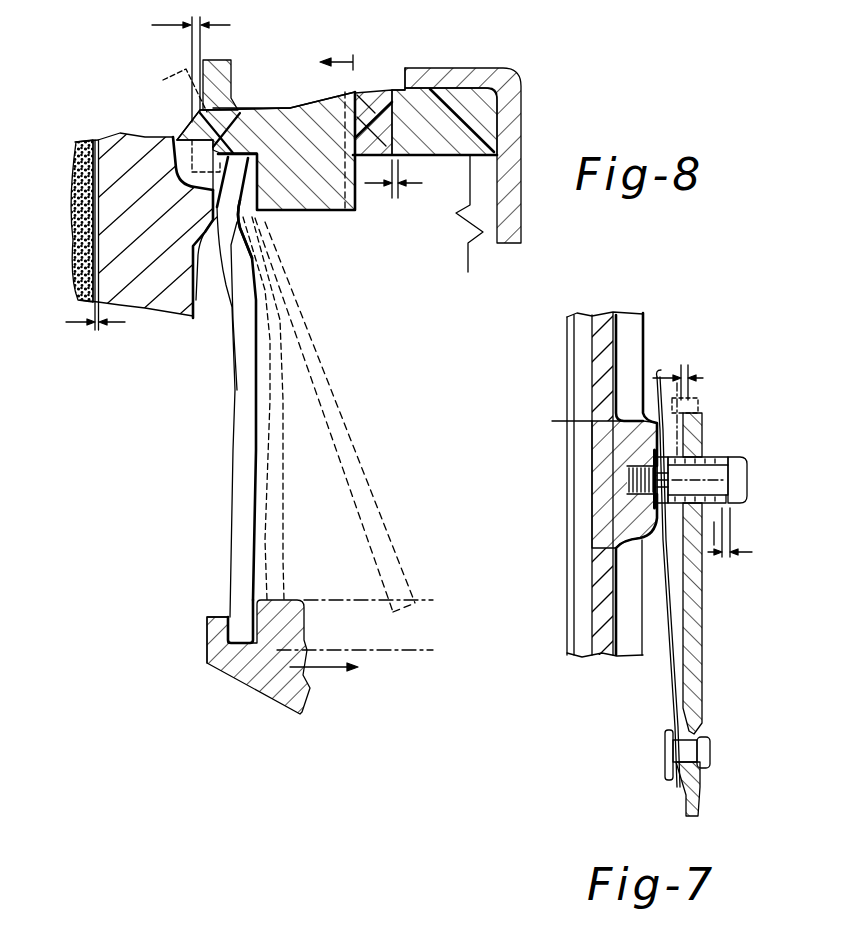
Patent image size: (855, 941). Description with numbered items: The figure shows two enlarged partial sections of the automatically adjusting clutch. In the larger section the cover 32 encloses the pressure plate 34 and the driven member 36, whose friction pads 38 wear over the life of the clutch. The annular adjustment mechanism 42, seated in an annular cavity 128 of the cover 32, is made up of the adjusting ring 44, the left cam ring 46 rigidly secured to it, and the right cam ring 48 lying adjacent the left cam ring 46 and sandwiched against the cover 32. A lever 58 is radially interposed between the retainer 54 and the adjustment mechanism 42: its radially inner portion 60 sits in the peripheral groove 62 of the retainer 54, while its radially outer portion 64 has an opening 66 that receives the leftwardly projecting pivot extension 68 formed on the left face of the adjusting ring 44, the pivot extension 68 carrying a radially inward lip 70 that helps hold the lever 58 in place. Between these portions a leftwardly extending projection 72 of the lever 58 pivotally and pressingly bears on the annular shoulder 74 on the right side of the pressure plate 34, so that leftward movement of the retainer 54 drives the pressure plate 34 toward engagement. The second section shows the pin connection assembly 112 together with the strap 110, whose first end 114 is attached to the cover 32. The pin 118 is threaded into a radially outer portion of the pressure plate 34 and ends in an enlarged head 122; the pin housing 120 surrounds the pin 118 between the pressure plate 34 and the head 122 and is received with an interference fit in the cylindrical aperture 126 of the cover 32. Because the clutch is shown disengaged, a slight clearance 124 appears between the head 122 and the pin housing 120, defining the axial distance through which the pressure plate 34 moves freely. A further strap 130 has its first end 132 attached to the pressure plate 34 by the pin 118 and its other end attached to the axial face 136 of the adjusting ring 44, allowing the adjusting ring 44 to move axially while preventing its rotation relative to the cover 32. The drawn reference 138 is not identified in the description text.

In FIG. 8, the cover 32 is at (513, 185).
In FIG. 7, the cover 32 is at (695, 632).
In FIG. 8, the pressure plate 34 is at (120, 162).
In FIG. 7, the pressure plate 34 is at (600, 365).
In FIG. 8, the driven member 36 is at (56, 260).
In FIG. 8, the friction pad 38 is at (78, 165).
In FIG. 8, the adjustment mechanism 42 is at (394, 64).
In FIG. 8, the adjusting ring 44 is at (317, 100).
In FIG. 8, the left cam ring 46 is at (378, 97).
In FIG. 8, the right cam ring 48 is at (470, 98).
In FIG. 8, the retainer 54 is at (300, 637).
In FIG. 8, the lever 58 is at (240, 437).
In FIG. 8, the radially inner portion 60 is at (242, 620).
In FIG. 8, the peripheral groove 62 is at (225, 617).
In FIG. 8, the radially outer portion 64 is at (217, 80).
In FIG. 8, the opening 66 is at (240, 147).
In FIG. 8, the pivot extension 68 is at (235, 140).
In FIG. 8, the radial lip 70 is at (176, 150).
In FIG. 8, the projection 72 is at (237, 327).
In FIG. 8, the annular shoulder 74 is at (193, 320).
In FIG. 7, the strap 110 is at (668, 643).
In FIG. 7, the pin connection assembly 112 is at (714, 545).
In FIG. 7, the first end 114 is at (682, 740).
In FIG. 7, the pin 118 is at (705, 480).
In FIG. 7, the pin housing 120 is at (718, 455).
In FIG. 7, the enlarged head 122 is at (747, 483).
In FIG. 7, the clearance 124 is at (753, 537).
In FIG. 7, the aperture 126 is at (700, 437).
In FIG. 8, the annular cavity 128 is at (322, 688).
In FIG. 7, the strap 130 is at (658, 377).
In FIG. 7, the first end 132 is at (547, 424).
In FIG. 8, the axial face 136 is at (296, 212).
In FIG. 8, the thin layer 138 is at (90, 323).
In FIG. 7, the thin layer 138 is at (712, 458).